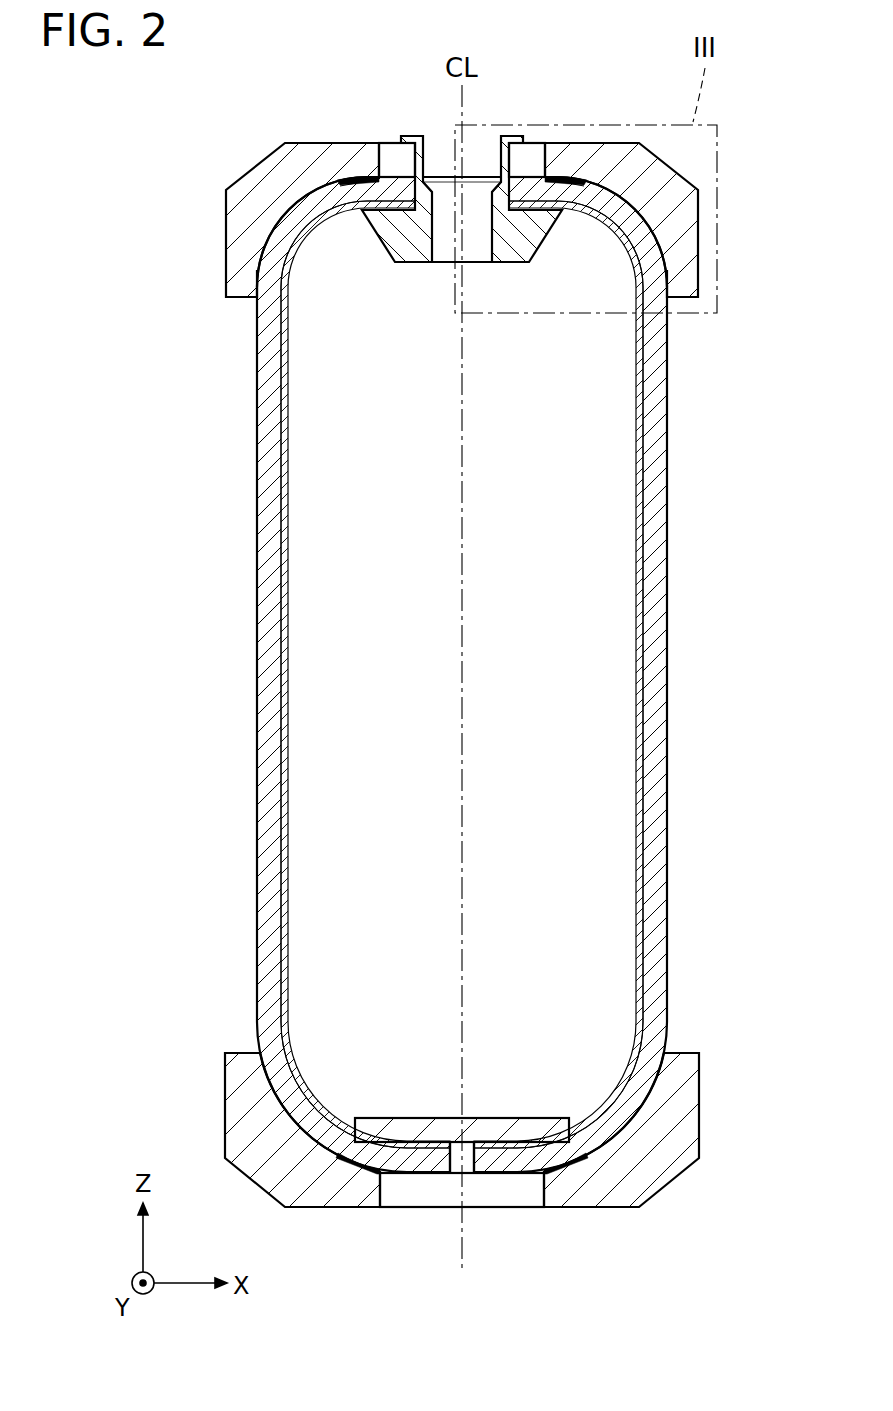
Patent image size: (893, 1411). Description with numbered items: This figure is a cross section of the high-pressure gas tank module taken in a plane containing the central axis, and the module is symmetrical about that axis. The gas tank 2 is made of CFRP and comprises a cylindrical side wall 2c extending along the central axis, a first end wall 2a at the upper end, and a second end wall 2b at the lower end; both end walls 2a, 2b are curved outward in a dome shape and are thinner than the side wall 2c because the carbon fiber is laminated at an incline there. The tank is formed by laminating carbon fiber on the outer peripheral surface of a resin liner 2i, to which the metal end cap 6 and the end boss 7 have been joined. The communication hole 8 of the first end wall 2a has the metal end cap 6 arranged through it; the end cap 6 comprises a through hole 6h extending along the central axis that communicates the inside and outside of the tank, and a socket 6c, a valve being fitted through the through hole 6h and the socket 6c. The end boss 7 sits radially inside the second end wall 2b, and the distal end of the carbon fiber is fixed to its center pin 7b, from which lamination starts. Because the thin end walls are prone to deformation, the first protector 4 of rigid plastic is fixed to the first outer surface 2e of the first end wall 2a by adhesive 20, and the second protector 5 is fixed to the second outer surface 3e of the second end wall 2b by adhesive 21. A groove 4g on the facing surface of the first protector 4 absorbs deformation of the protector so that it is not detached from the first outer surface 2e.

The gas tank 2 is at (187, 675).
The first end wall 2a is at (292, 238).
The second end wall 2b is at (290, 1130).
The side wall 2c is at (270, 442).
The first outer surface 2e is at (248, 280).
The resin liner 2i is at (285, 535).
The first protector 4 is at (260, 196).
The groove 4g is at (342, 182).
The second protector 5 is at (263, 1165).
The second outer surface 3e is at (262, 1086).
The metal end cap 6 is at (391, 126).
The socket 6c is at (413, 143).
The through hole 6h is at (445, 207).
The end boss 7 is at (382, 1103).
The center pin 7b is at (467, 1163).
The communication hole 8 is at (478, 185).
The adhesive 20 is at (350, 177).
The adhesive 21 is at (347, 1180).